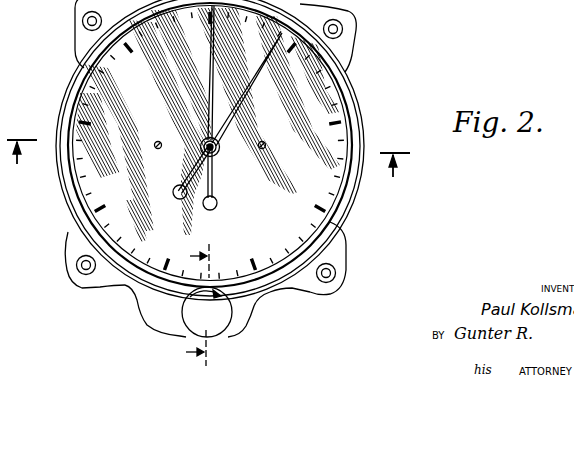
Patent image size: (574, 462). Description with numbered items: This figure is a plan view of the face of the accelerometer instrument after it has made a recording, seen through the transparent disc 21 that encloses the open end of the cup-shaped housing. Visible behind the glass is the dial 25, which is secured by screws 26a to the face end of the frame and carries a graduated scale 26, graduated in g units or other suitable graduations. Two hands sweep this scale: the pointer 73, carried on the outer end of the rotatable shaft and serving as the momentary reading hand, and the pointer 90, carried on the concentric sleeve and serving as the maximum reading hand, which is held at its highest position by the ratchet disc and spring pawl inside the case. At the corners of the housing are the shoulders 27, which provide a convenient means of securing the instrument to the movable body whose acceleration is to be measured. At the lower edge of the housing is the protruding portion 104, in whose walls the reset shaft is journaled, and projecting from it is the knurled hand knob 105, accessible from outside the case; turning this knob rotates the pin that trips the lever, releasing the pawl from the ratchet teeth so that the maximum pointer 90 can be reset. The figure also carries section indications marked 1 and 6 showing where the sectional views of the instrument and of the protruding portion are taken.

The section line 1- 1 is at (208, 172).
The section line 6- 6 is at (187, 302).
The transparent disc 21 is at (127, 83).
The dial 25 is at (293, 108).
The graduated scale 26 is at (333, 118).
The screws 26a is at (156, 149).
The shoulders 27 is at (72, 22).
The pointer 73 is at (209, 67).
The pointer 90 is at (233, 114).
The protruding portion 104 is at (153, 316).
The knurled hand knob 105 is at (234, 312).